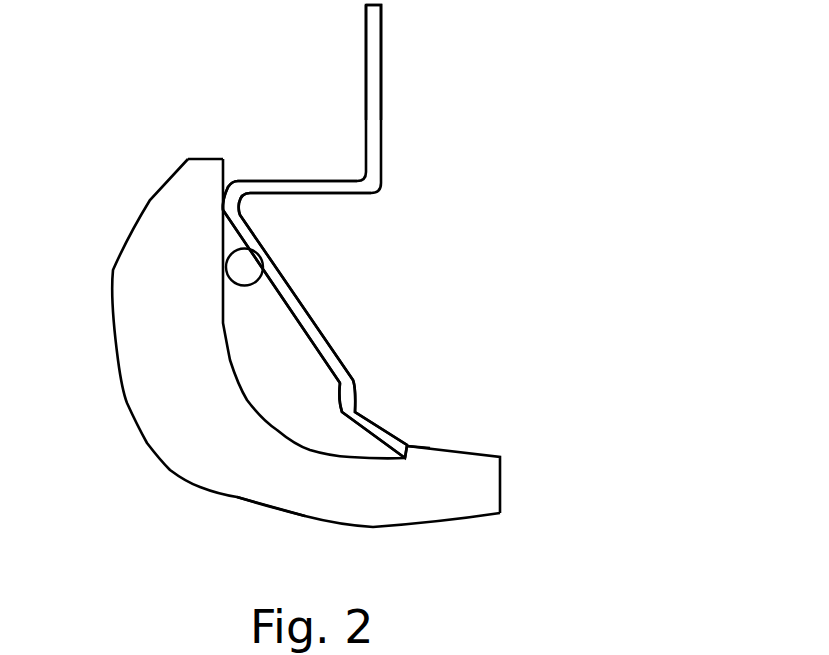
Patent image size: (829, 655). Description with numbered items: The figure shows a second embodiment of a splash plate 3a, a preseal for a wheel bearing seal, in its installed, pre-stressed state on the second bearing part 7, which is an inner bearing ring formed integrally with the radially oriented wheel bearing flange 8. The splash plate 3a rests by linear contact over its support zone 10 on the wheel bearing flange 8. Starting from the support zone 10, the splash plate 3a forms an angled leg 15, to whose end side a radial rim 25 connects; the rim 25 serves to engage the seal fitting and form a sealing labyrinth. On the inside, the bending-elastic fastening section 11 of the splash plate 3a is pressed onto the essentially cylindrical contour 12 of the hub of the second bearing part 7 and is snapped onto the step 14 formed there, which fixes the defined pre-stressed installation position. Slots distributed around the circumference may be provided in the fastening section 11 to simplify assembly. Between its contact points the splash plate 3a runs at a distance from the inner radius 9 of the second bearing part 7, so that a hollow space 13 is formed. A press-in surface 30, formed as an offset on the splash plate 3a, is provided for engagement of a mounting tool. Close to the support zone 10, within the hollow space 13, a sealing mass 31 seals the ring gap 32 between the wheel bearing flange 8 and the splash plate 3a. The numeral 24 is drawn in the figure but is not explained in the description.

The splash plate 3a is at (400, 145).
The second bearing part 7 is at (255, 497).
The wheel bearing flange 8 is at (155, 203).
The inner radius 9 is at (230, 338).
The support zone 10 is at (223, 205).
The fastening section 11 is at (388, 433).
The cylindrical contour 12 is at (430, 448).
The hollow space 13 is at (275, 330).
The step 14 is at (415, 450).
The angled leg 15 is at (328, 181).
The bend region 24 is at (268, 155).
The rim 25 is at (381, 23).
The press-in surface 30 is at (358, 412).
The sealing mass 31 is at (262, 252).
The ring gap 32 is at (225, 245).